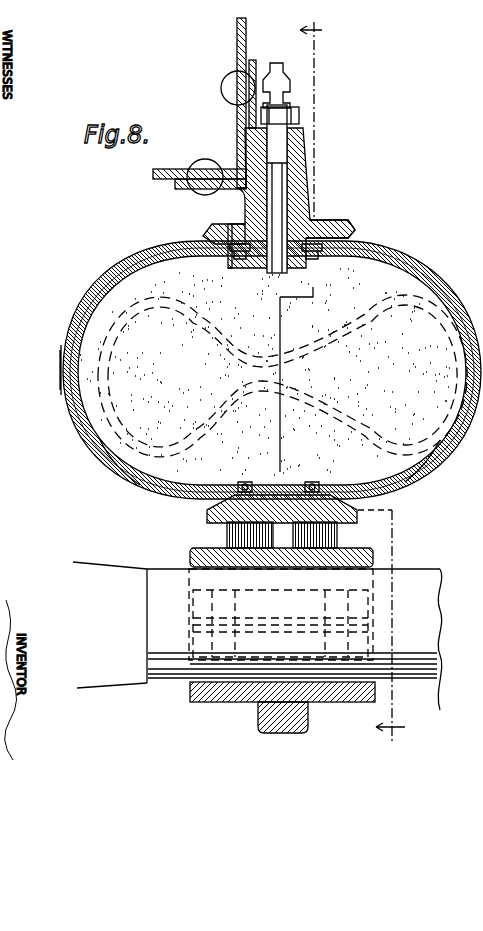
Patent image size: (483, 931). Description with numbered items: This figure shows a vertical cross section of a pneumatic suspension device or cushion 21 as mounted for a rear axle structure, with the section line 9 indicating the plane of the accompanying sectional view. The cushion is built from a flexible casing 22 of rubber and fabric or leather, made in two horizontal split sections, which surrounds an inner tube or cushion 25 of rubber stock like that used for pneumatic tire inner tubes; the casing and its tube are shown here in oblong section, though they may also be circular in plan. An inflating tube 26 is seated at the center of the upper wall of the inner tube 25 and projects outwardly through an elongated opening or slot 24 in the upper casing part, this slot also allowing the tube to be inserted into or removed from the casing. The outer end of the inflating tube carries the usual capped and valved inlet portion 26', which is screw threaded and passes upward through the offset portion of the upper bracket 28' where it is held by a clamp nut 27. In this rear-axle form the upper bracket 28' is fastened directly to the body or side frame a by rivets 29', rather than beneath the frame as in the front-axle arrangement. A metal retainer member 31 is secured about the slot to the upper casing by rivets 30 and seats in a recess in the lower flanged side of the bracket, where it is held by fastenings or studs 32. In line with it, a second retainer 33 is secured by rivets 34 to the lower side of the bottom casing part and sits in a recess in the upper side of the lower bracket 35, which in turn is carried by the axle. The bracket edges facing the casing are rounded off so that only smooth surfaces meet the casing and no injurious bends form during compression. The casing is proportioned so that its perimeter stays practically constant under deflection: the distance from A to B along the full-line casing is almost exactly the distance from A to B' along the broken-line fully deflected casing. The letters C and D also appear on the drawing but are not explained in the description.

The body or side frame a is at (237, 32).
The section line 9- 9 is at (352, 384).
The pneumatic suspension device or cushion 21 is at (96, 283).
The casing 22 is at (128, 482).
The elongated opening or slot 24 is at (66, 362).
The inner tube or cushion 25 is at (433, 474).
The inflating tube 26 is at (291, 164).
The capped and valved inlet portion 26' is at (304, 85).
The clamp nut 27 is at (300, 113).
The upper bracket 28' is at (236, 238).
The rivets 29' is at (204, 133).
The rivets 30 is at (243, 224).
The retainer member 31 is at (373, 416).
The fastenings or studs 32 is at (318, 238).
The second retainer 33 is at (232, 504).
The rivets 34 is at (347, 527).
The lower bracket 35 is at (228, 540).
The point A is at (470, 384).
The point B is at (310, 448).
The point B' is at (294, 401).
The chamber C is at (378, 396).
The line D is at (206, 240).